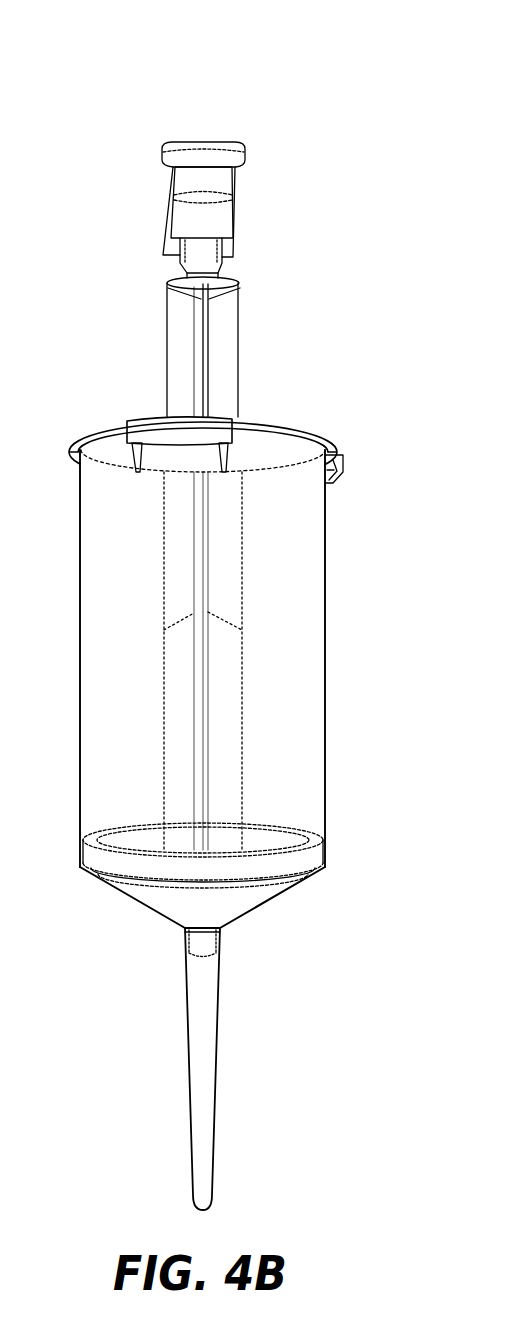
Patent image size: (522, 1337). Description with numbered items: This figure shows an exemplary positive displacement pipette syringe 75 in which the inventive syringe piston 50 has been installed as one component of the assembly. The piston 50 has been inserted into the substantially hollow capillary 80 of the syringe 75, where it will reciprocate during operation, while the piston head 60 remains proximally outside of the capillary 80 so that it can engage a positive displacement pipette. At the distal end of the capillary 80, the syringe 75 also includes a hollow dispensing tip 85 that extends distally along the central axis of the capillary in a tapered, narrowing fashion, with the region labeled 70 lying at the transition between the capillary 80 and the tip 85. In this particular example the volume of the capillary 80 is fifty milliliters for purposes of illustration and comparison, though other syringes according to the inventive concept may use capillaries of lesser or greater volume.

The positive displacement pipette syringe 75 is at (323, 82).
The piston head 60 is at (210, 142).
The syringe piston 50 is at (268, 294).
The capillary 80 is at (325, 590).
The nozzle 70 is at (203, 953).
The dispensing tip 85 is at (218, 1087).